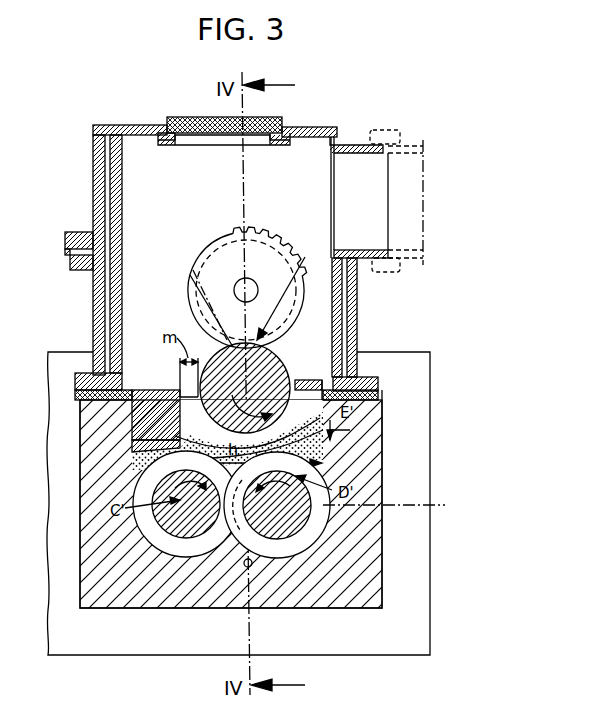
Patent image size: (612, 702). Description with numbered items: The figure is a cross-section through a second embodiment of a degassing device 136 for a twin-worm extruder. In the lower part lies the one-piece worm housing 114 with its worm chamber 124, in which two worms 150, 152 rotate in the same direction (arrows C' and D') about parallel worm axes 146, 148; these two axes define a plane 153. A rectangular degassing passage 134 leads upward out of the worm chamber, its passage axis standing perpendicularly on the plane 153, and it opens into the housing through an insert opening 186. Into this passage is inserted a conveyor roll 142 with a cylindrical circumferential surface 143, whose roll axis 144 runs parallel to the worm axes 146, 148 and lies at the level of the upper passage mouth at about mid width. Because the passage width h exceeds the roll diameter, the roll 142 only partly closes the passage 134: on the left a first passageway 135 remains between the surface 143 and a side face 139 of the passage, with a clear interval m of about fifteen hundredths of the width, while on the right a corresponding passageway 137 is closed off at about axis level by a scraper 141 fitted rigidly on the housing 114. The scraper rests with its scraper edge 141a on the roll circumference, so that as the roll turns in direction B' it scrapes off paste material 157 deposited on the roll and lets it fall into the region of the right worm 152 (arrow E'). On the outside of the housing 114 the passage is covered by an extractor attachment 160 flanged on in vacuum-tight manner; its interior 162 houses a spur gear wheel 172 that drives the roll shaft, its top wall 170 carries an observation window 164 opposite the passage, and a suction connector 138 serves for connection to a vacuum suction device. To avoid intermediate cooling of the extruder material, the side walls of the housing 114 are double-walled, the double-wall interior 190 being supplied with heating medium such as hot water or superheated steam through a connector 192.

The worm housing 114 is at (392, 455).
The worm chamber 124 is at (249, 567).
The degassing passage 134 is at (150, 406).
The first passageway 135 is at (180, 394).
The degassing device 136 is at (400, 128).
The passageway 137 is at (357, 383).
The suction connector 138 is at (356, 145).
The side face 139 is at (150, 432).
The scraper 141 is at (340, 376).
The scraper edge 141a is at (306, 380).
The conveyor roll 142 is at (214, 352).
The cylindrical circumferential surface 143 is at (306, 257).
The roll axis 144 is at (190, 277).
The worm axis 146 is at (176, 540).
The worm axis 148 is at (300, 547).
The worm 150 is at (147, 526).
The worm 152 is at (318, 527).
The plane 153 is at (438, 502).
The paste material 157 is at (302, 452).
The extractor attachment 160 is at (94, 124).
The interior 162 is at (125, 163).
The observation window 164 is at (196, 117).
The top wall 170 is at (142, 124).
The spur gear wheel 172 is at (241, 250).
The insert opening 186 is at (140, 462).
The double-wall interior 190 is at (95, 203).
The connector 192 is at (84, 271).